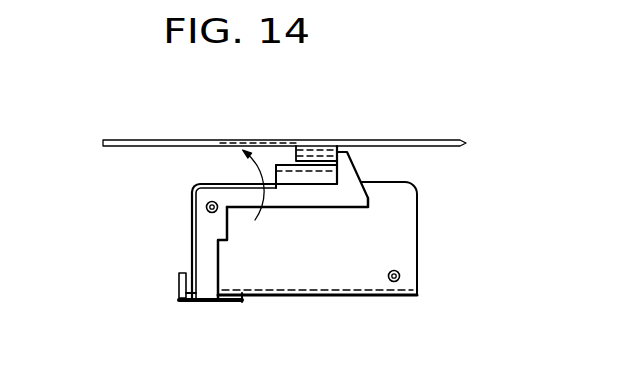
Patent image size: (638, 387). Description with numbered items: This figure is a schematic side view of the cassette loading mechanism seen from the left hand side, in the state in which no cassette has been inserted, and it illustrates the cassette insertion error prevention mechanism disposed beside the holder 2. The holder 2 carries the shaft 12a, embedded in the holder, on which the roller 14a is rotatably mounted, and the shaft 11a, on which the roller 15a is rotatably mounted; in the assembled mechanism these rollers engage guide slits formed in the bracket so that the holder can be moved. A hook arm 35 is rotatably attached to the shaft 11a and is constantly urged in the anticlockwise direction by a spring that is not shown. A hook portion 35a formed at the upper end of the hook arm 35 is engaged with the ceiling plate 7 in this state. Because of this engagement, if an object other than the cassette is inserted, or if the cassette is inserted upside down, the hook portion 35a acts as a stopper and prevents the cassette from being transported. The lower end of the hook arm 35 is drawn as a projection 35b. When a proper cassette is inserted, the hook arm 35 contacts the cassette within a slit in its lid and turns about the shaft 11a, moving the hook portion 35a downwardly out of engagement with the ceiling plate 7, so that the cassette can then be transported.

The holder 2 is at (326, 297).
The ceiling plate 7 is at (417, 140).
The shaft 11a is at (192, 193).
The shaft 12a is at (391, 282).
The roller 14a is at (400, 278).
The roller 15a is at (206, 209).
The hook arm 35 is at (240, 197).
The hook portion 35a is at (354, 167).
The projection of cover 35b is at (178, 283).